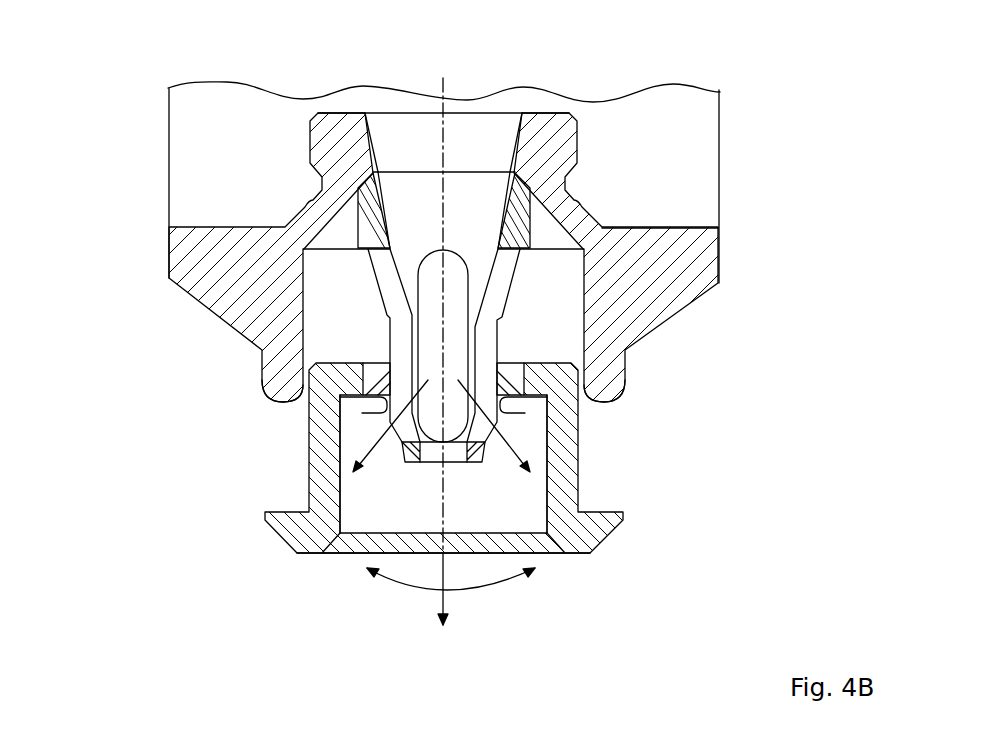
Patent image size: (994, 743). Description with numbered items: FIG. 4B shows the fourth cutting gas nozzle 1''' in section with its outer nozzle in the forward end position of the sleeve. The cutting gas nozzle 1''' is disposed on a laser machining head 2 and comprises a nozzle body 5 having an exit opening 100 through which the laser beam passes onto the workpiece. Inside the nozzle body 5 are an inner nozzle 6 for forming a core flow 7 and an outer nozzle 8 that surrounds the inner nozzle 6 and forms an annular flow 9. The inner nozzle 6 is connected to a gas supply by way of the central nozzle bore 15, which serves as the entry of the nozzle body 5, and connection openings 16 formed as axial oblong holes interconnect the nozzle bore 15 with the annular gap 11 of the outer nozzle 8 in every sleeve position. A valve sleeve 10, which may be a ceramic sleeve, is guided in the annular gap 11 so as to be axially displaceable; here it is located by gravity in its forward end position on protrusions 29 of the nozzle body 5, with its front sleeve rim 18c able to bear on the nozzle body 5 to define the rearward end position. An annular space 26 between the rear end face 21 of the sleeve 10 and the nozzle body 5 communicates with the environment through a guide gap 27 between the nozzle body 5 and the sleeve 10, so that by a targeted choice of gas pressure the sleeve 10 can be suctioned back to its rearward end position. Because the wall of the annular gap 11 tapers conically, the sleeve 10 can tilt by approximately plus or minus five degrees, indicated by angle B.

The cutting gas nozzle 1''' is at (104, 86).
The laser machining head 2 is at (677, 130).
The nozzle body 5 is at (606, 219).
The nozzle bore 15 is at (478, 163).
The annular gap 11 is at (315, 277).
The annular space 26 is at (338, 214).
The connection openings 16 is at (433, 320).
The exit opening 100 is at (452, 456).
The valve sleeve 10 is at (310, 473).
The annular flow 9 is at (508, 437).
The front sleeve rim 18c is at (621, 519).
The rear end face 21 is at (342, 348).
The protrusions 29 is at (372, 407).
The guide gap 27 is at (583, 380).
The outer nozzle 8 is at (392, 452).
The inner nozzle 6 is at (421, 477).
The core flow 7 is at (447, 603).
The pivot angle B is at (477, 590).